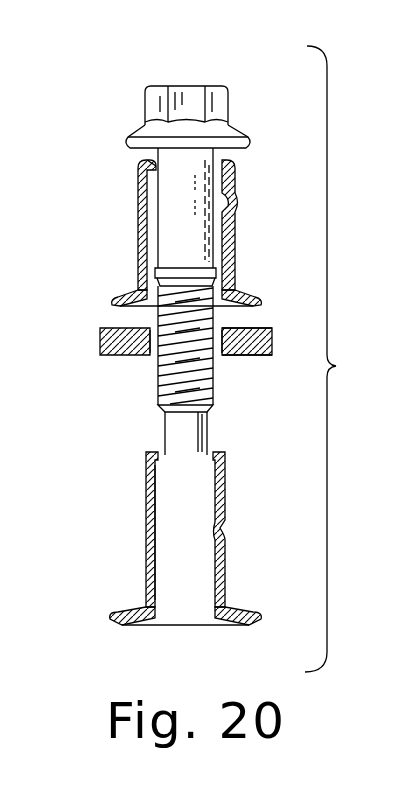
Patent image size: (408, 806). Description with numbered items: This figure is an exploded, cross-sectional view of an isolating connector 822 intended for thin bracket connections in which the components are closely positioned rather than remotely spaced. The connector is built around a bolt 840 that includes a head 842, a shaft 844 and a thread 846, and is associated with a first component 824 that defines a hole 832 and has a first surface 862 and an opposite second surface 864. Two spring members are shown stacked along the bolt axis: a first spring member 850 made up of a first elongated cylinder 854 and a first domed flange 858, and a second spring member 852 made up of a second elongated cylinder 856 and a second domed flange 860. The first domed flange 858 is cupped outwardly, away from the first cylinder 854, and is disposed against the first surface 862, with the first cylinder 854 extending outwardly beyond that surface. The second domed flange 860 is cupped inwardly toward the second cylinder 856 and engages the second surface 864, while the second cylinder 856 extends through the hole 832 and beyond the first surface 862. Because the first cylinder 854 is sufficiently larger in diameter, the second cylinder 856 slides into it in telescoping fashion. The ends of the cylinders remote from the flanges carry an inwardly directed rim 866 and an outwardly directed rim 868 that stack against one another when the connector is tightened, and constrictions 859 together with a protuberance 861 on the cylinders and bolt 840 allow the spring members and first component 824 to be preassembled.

The bolt 840 is at (186, 78).
The isolating connector 822 is at (106, 131).
The head 842 is at (219, 103).
The shaft 844 is at (195, 157).
The protuberance 861 is at (182, 265).
The thread 846 is at (205, 396).
The hole 832 is at (152, 352).
The first component 824 is at (100, 349).
The second surface 864 is at (244, 357).
The first surface 862 is at (275, 326).
The first spring member 850 is at (139, 226).
The first cylinder 854 is at (140, 194).
The inwardly directed rim 866 is at (152, 157).
The constriction 859 is at (236, 200).
The first domed flange 858 is at (112, 291).
The second spring member 852 is at (142, 544).
The outwardly directed rim 868 is at (148, 454).
The second cylinder 856 is at (150, 490).
The second domed flange 860 is at (125, 624).